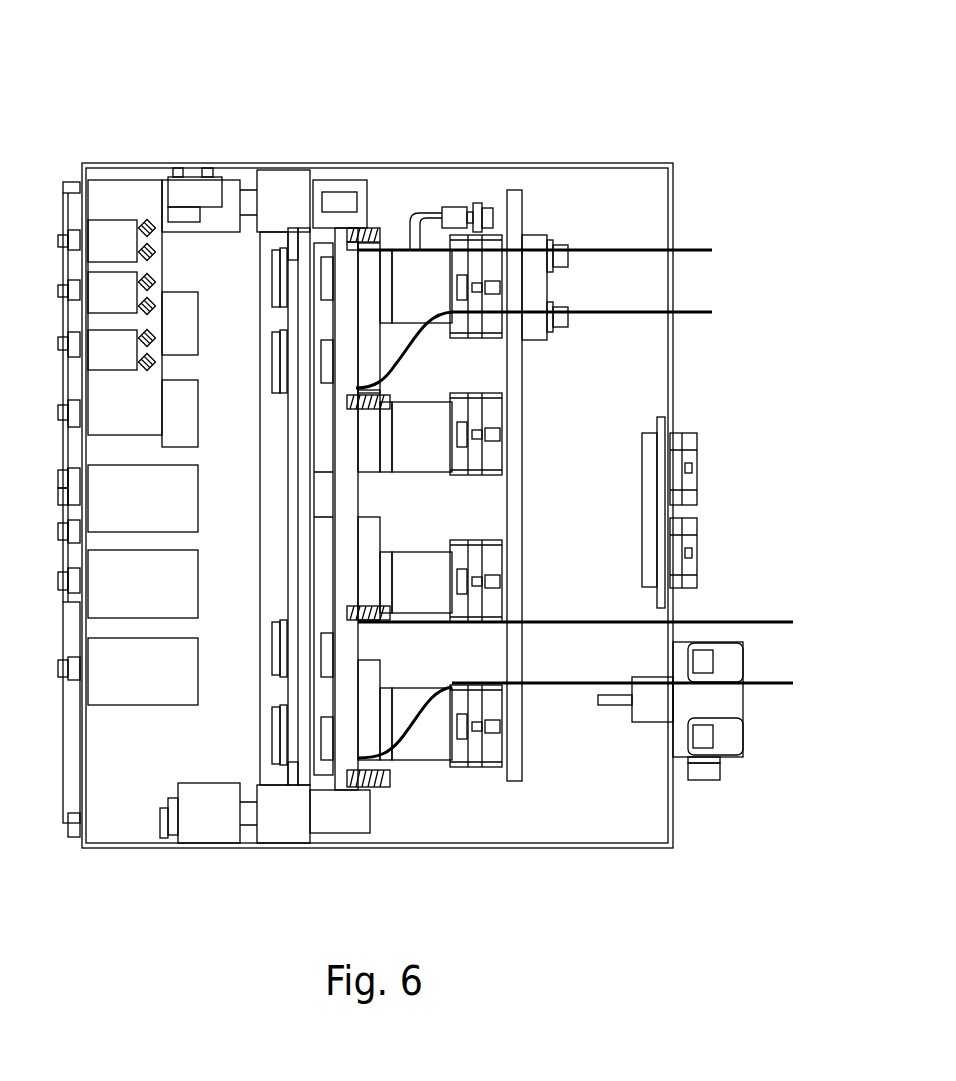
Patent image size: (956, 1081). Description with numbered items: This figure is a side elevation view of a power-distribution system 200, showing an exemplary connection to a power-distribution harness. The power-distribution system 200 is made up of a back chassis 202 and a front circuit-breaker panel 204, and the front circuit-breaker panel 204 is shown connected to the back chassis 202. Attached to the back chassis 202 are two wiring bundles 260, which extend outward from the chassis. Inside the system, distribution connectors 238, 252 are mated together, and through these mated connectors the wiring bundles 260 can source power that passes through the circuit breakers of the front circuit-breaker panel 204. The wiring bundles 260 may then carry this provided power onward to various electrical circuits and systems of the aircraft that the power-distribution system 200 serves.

The power-distribution system 200 is at (112, 85).
The back chassis 202 is at (608, 163).
The front circuit-breaker panel 204 is at (257, 170).
The distribution connector 238 is at (327, 360).
The distribution connector 252 is at (270, 338).
The wiring bundle 260 is at (730, 291).